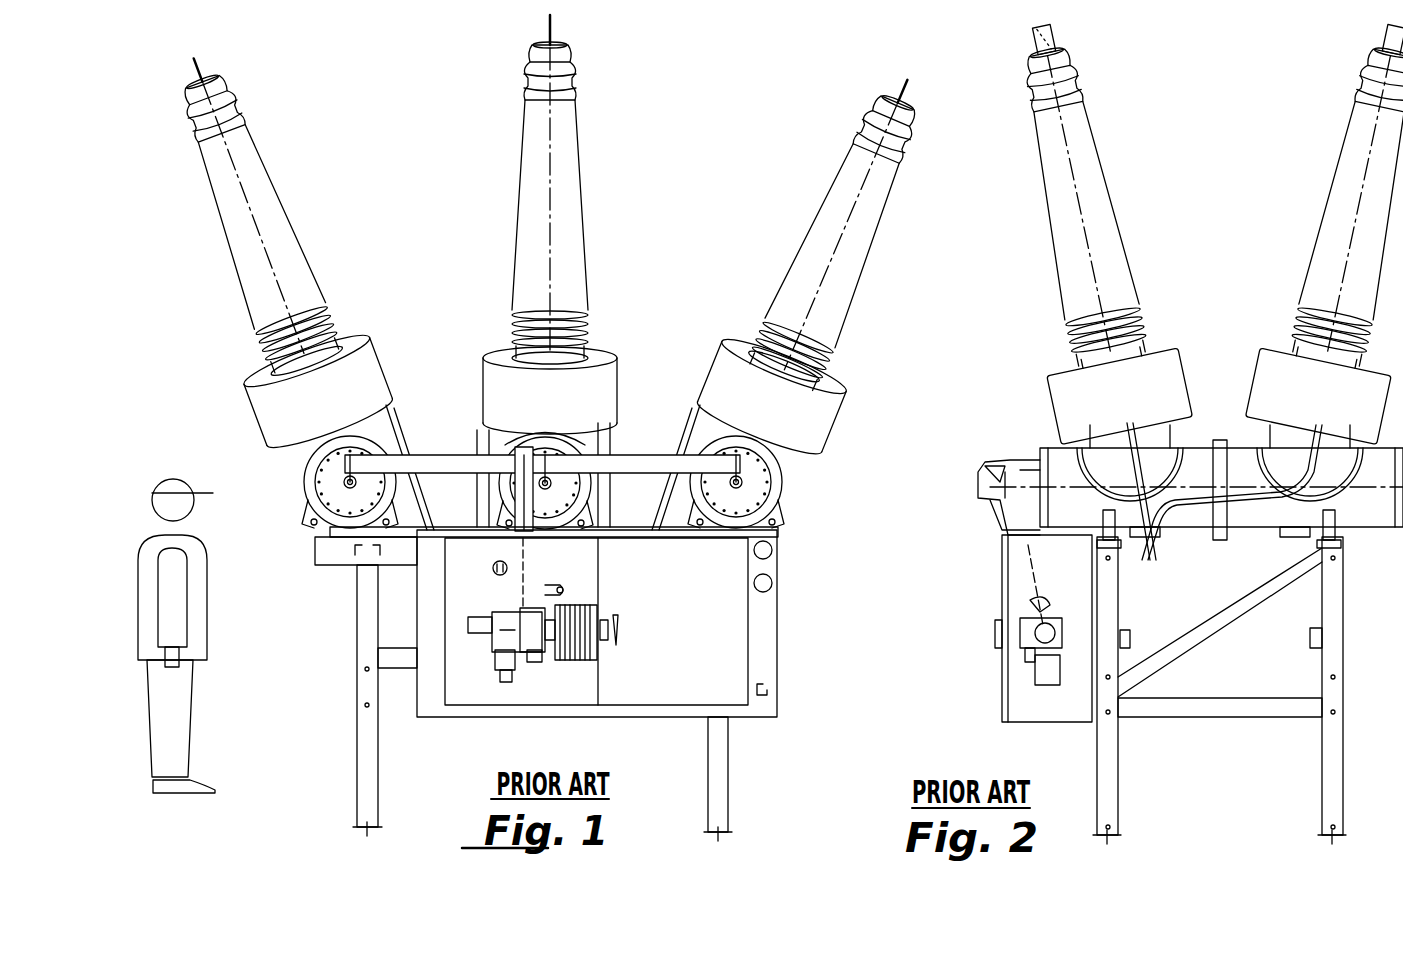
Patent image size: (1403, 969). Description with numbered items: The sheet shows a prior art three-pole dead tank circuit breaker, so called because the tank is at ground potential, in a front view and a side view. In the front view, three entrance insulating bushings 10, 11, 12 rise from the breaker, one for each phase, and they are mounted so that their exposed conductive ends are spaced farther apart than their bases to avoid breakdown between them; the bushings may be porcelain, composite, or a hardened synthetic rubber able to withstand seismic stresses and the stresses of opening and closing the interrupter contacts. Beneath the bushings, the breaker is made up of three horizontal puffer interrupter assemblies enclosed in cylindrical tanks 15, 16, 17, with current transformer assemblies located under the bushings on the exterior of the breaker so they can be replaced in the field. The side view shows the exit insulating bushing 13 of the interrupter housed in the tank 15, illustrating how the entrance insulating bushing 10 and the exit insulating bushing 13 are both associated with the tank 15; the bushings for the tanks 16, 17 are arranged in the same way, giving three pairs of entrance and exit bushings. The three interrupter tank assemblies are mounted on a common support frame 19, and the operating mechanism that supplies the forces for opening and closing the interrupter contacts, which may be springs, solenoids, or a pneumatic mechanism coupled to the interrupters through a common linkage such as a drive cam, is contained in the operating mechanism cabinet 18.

In FIG. 1, the entrance insulating bushing 10 is at (255, 174).
In FIG. 2, the entrance insulating bushing 10 is at (1338, 200).
In FIG. 1, the entrance insulating bushing 11 is at (572, 190).
In FIG. 1, the entrance insulating bushing 12 is at (882, 192).
In FIG. 2, the exit insulating bushing 13 is at (1098, 190).
In FIG. 1, the cylindrical tank 15 is at (388, 437).
In FIG. 2, the cylindrical tank 15 is at (1199, 444).
In FIG. 1, the cylindrical tank 16 is at (592, 442).
In FIG. 1, the cylindrical tank 17 is at (775, 487).
In FIG. 1, the operating mechanism housing or cabinet 18 is at (712, 645).
In FIG. 2, the operating mechanism housing or cabinet 18 is at (1018, 696).
In FIG. 1, the common support frame 19 is at (346, 771).
In FIG. 2, the common support frame 19 is at (1084, 768).